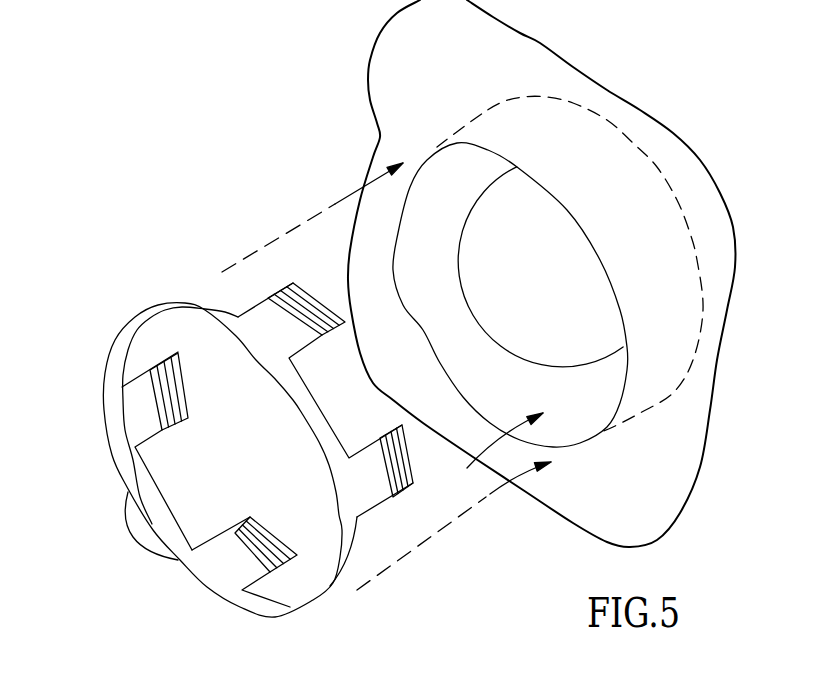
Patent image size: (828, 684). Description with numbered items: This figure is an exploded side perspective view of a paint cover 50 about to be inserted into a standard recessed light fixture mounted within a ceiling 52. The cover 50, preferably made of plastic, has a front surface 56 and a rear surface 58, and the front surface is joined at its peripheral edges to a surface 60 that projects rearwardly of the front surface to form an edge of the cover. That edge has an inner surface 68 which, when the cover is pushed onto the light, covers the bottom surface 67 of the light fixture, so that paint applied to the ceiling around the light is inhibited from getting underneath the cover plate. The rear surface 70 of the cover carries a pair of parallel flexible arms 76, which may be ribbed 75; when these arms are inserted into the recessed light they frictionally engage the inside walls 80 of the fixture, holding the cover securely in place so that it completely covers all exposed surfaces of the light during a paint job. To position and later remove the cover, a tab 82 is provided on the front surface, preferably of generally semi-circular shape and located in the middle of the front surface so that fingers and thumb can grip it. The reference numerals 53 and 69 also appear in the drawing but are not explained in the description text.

The cover 50 is at (150, 577).
The ceiling 52 is at (583, 495).
The aperture 53 is at (418, 156).
The front surface 56 is at (110, 467).
The rear surface 58 is at (263, 423).
The surface 60 is at (117, 348).
The bottom surface 67 is at (476, 285).
The inner surface 68 is at (142, 332).
The opening 69 is at (483, 231).
The rear surface 70 is at (317, 563).
The ribs 75 is at (250, 555).
The flexible arms 76 is at (262, 302).
The inside walls 80 is at (386, 376).
The tab 82 is at (137, 533).